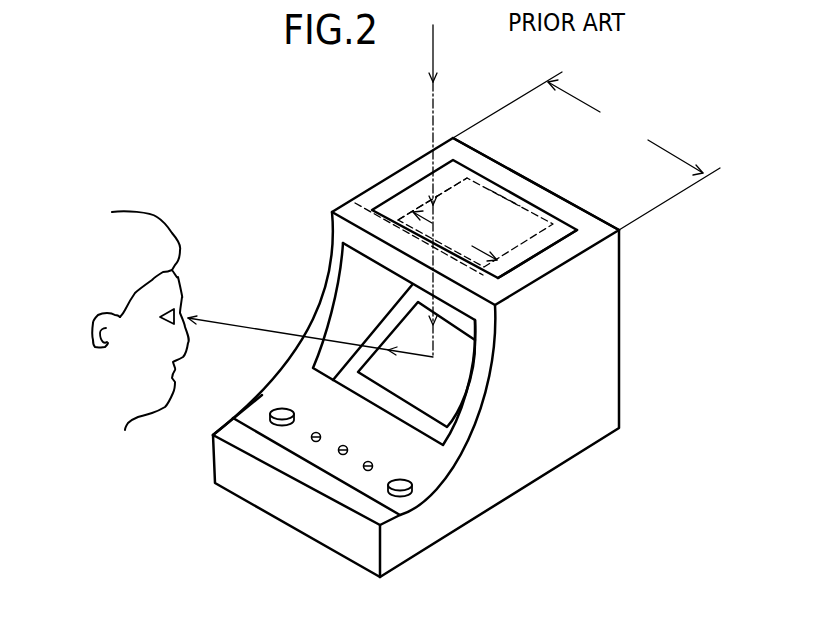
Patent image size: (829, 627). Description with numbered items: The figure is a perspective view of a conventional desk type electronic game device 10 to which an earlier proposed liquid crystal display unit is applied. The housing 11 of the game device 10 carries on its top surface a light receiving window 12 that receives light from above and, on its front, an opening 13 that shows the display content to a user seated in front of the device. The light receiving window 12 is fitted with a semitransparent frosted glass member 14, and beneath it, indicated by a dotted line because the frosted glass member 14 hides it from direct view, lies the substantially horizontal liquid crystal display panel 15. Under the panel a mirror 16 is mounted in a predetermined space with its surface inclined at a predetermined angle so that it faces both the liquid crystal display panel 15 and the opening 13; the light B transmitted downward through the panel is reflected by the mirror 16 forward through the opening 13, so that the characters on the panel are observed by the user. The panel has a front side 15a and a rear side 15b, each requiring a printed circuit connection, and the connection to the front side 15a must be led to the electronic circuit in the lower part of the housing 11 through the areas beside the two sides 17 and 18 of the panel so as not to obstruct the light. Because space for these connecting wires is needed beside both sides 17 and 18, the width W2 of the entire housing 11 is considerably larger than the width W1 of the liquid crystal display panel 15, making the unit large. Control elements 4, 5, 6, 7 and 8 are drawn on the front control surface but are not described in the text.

The desk type electronic game device 10 is at (634, 390).
The housing 11 is at (610, 308).
The light receiving window 12 is at (538, 206).
The opening 13 is at (348, 295).
The frosted glass member 14 is at (447, 172).
The liquid crystal display panel 15 is at (556, 212).
The front side of the liquid crystal display panel 15a is at (355, 203).
The rear side of the liquid crystal display panel 15b is at (505, 190).
The mirror 16 is at (453, 390).
The side of the liquid crystal display panel 17 is at (546, 242).
The side of the liquid crystal display panel 18 is at (420, 196).
The control button 4 is at (275, 412).
The control button 5 is at (407, 497).
The push button 6 is at (313, 442).
The push button 7 is at (340, 455).
The push button 8 is at (366, 471).
The light B is at (436, 47).
The width of the liquid crystal display panel W1 is at (455, 236).
The width of the entire housing W2 is at (586, 151).